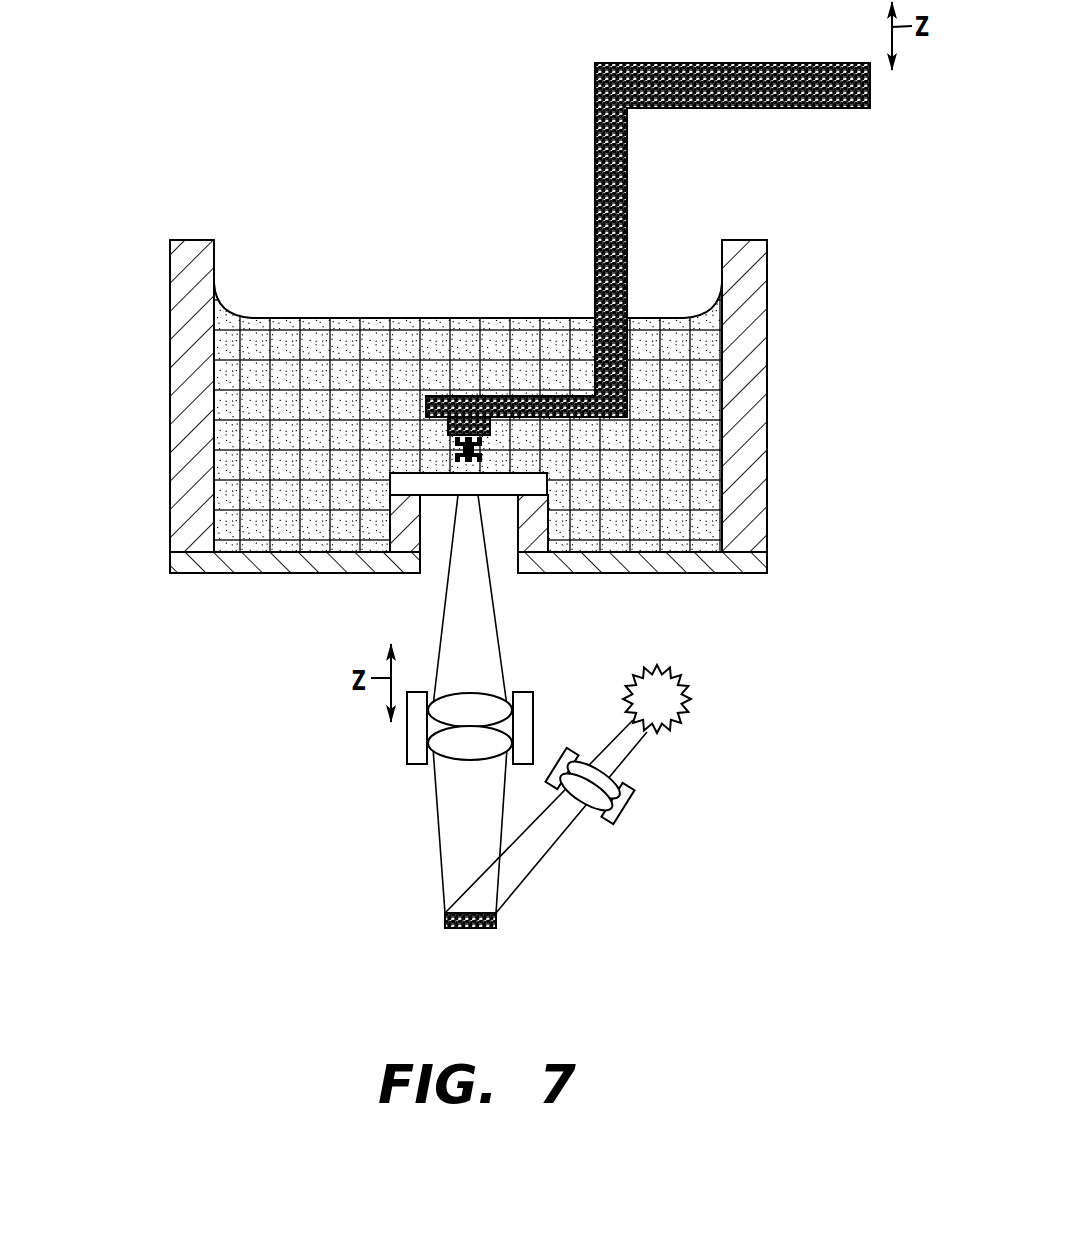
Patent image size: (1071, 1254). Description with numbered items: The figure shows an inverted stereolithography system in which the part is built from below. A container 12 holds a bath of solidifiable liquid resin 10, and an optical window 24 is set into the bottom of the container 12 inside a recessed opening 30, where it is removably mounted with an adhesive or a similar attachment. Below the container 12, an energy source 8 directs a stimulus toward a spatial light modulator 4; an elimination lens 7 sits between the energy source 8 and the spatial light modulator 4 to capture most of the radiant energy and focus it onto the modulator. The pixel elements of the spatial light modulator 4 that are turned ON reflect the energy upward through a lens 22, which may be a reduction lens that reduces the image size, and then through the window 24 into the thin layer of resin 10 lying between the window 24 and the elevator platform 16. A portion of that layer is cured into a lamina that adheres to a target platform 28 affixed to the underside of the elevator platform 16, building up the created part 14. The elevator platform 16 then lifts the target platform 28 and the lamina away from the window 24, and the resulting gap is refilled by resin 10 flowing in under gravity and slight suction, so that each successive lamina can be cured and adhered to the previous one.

The spatial light modulator 4 is at (443, 920).
The lens 7 is at (628, 808).
The energy source 8 is at (697, 690).
The resin 10 is at (268, 365).
The container 12 is at (180, 408).
The created part 14 is at (500, 450).
The elevator platform 16 is at (828, 112).
The lens 22 is at (402, 753).
The optical window 24 is at (390, 485).
The target platform 28 is at (500, 425).
The recessed opening 30 is at (503, 568).